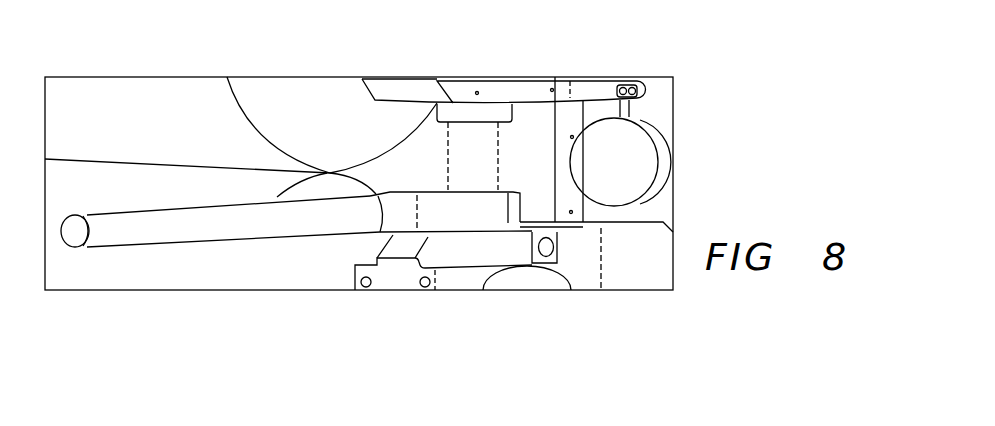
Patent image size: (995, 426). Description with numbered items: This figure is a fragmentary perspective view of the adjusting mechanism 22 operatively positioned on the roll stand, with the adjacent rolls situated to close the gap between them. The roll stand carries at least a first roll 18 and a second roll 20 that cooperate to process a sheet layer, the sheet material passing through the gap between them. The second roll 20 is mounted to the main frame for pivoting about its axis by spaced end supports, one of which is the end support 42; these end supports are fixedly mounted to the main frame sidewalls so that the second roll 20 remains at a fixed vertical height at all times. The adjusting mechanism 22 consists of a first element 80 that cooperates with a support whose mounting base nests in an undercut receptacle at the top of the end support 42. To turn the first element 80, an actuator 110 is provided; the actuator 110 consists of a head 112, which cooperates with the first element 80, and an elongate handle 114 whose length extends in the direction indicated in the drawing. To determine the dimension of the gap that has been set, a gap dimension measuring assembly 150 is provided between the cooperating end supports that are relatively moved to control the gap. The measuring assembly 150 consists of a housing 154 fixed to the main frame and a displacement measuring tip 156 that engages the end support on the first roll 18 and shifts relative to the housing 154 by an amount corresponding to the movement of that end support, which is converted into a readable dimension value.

The first roll 18 is at (167, 131).
The second roll 20 is at (150, 283).
The adjusting mechanism 22 is at (523, 148).
The end support 42 is at (485, 255).
The first element 80 is at (487, 166).
The actuator 110 is at (245, 219).
The head 112 is at (448, 217).
The elongate handle 114 is at (303, 229).
The gap dimension measuring assembly 150 is at (650, 147).
The housing 154 is at (617, 170).
The displacement measuring tip 156 is at (653, 83).